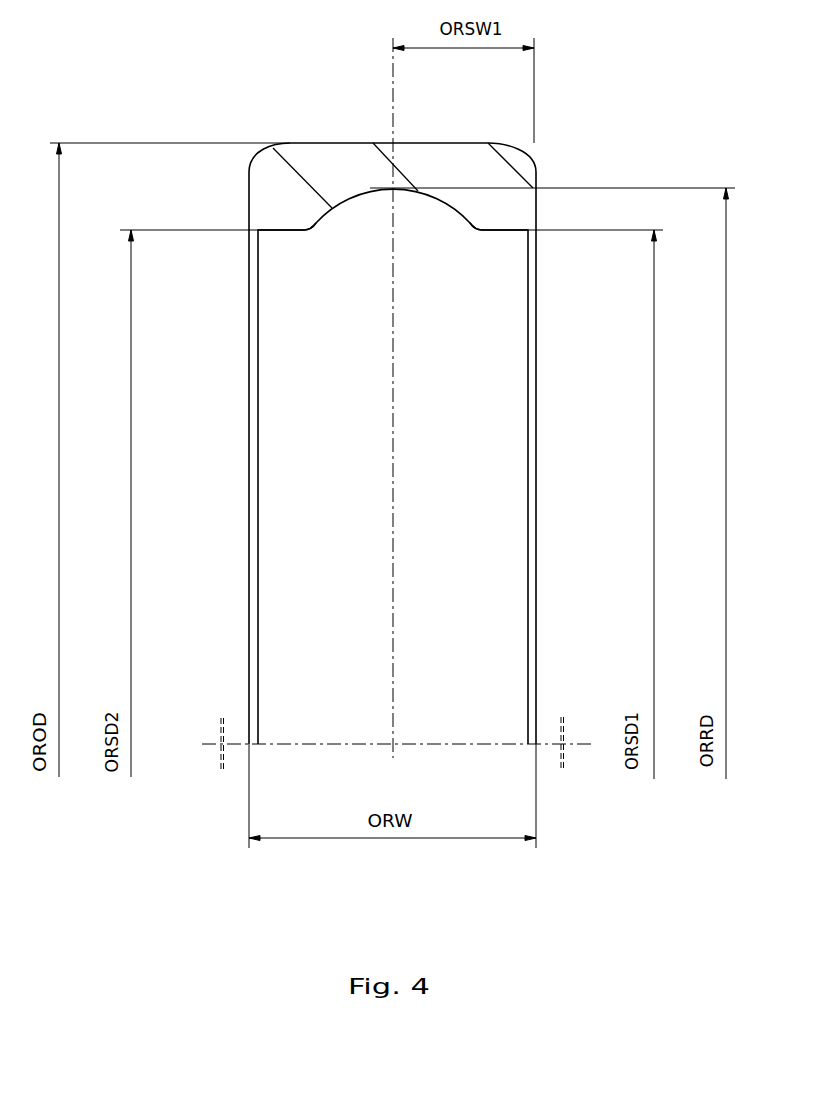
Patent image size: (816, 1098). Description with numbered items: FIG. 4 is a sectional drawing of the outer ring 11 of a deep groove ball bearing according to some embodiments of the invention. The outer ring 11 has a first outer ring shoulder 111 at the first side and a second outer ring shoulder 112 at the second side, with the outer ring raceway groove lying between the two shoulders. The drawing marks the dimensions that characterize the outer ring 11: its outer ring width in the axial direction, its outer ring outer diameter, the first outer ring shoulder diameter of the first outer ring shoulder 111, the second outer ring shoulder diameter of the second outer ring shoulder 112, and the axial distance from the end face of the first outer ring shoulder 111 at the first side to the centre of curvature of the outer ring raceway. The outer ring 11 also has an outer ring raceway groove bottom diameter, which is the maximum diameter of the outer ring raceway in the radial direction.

The outer ring 11 is at (435, 157).
The first outer ring shoulder 111 is at (500, 232).
The second outer ring shoulder 112 is at (273, 233).